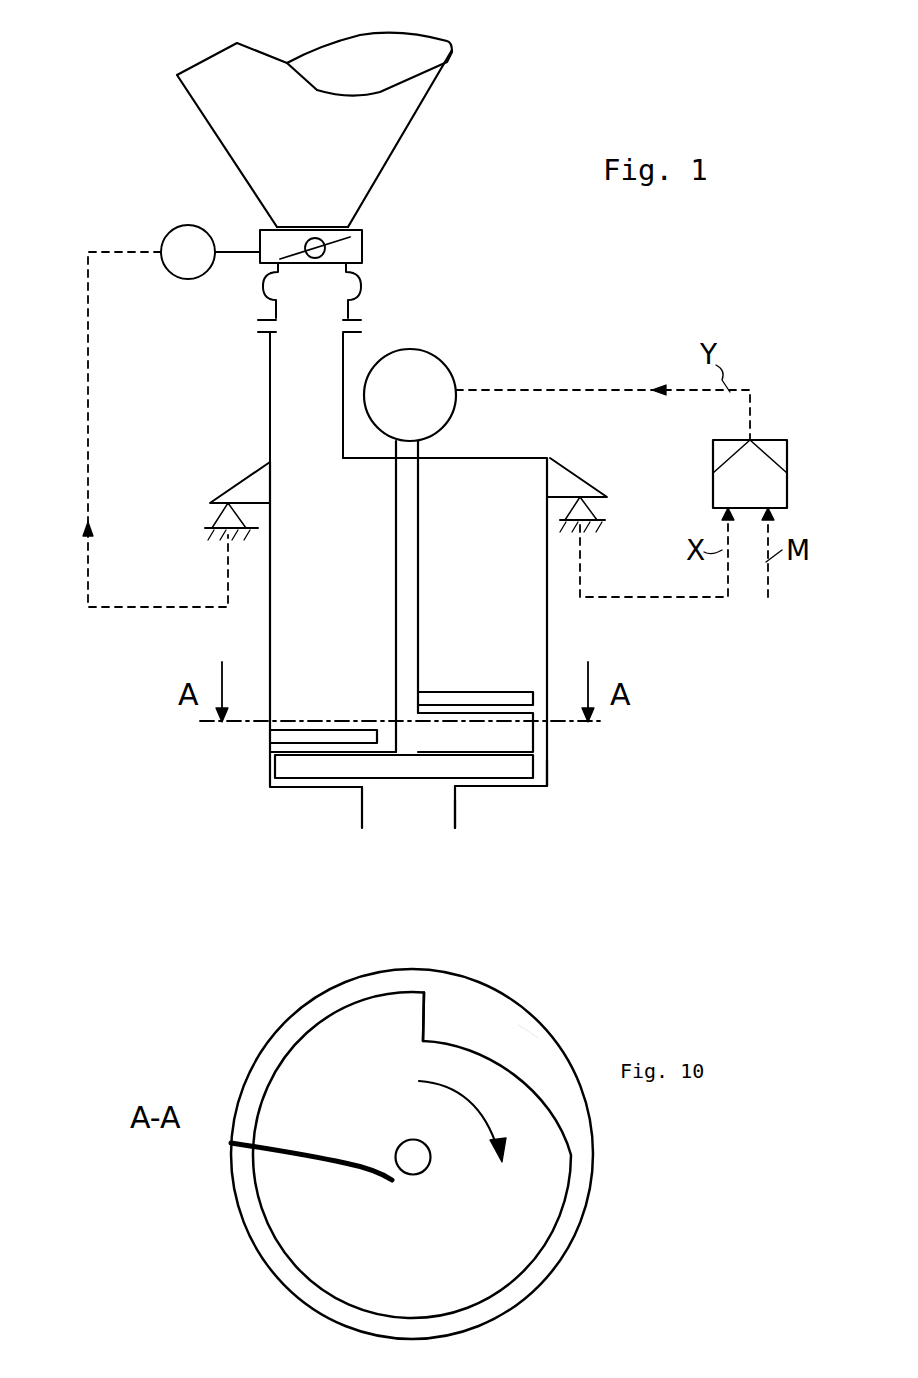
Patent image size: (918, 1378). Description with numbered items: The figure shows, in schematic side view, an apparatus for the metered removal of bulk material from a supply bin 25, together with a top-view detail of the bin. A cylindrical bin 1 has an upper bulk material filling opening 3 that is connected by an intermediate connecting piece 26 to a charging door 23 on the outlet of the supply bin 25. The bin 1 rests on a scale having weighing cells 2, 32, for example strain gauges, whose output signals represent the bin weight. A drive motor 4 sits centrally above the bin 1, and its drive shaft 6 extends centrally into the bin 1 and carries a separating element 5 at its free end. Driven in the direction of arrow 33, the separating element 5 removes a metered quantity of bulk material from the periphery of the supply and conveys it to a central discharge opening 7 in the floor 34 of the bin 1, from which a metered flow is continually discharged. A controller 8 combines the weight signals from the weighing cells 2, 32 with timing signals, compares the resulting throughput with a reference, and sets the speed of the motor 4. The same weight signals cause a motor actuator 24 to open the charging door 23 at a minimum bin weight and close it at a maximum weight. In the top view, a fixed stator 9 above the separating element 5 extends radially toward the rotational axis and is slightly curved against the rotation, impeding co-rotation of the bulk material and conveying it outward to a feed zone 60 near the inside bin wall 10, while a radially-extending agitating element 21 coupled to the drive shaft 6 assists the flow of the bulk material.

In FIG. 1, the cylindrical bin 1 is at (270, 680).
In FIG. 10, the cylindrical bin 1 is at (359, 968).
In FIG. 1, the weighing cell 2 is at (215, 522).
In FIG. 1, the bulk material filling opening 3 is at (288, 410).
In FIG. 1, the drive motor 4 is at (440, 352).
In FIG. 1, the separating element 5 is at (438, 775).
In FIG. 10, the separating element 5 is at (300, 1274).
In FIG. 1, the drive shaft 6 is at (420, 612).
In FIG. 10, the drive shaft 6 is at (415, 1184).
In FIG. 1, the central discharge opening 7 is at (440, 830).
In FIG. 1, the controller 8 is at (787, 478).
In FIG. 1, the stator 9 is at (304, 735).
In FIG. 10, the stator 9 is at (300, 1143).
In FIG. 10, the inside bin wall 10 is at (501, 992).
In FIG. 1, the agitating element 21 is at (450, 688).
In FIG. 1, the charging door 23 is at (362, 238).
In FIG. 1, the motor actuator 24 is at (168, 225).
In FIG. 1, the supply bin 25 is at (230, 55).
In FIG. 1, the intermediate connecting piece 26 is at (265, 296).
In FIG. 1, the weighing cell 32 is at (594, 512).
In FIG. 10, the arrow 33 is at (484, 1125).
In FIG. 1, the floor 34 is at (522, 790).
In FIG. 10, the feed zone 60 is at (510, 1030).